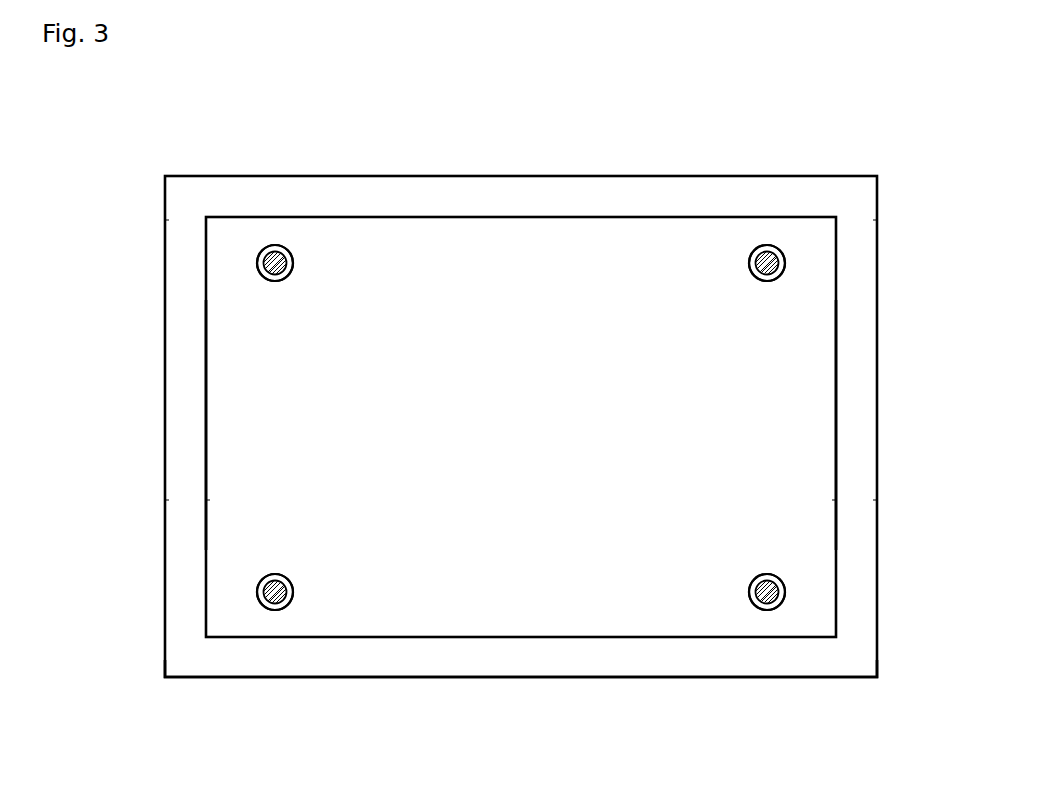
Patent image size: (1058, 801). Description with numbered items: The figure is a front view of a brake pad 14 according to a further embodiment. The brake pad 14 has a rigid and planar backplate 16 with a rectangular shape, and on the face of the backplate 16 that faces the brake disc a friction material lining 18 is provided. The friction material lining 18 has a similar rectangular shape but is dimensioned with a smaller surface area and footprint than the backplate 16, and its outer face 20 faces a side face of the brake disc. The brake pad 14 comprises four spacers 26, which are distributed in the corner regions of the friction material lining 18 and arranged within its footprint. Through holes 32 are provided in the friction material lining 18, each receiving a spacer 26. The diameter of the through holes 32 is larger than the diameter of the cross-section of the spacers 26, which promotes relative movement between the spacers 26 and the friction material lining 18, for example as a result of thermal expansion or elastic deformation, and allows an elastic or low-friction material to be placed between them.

The brake pad 14 is at (878, 262).
The backplate 16 is at (860, 660).
The friction material lining 18 is at (836, 332).
The outer face 20 is at (782, 461).
The spacers 26 is at (278, 255).
The through holes 32 is at (293, 257).